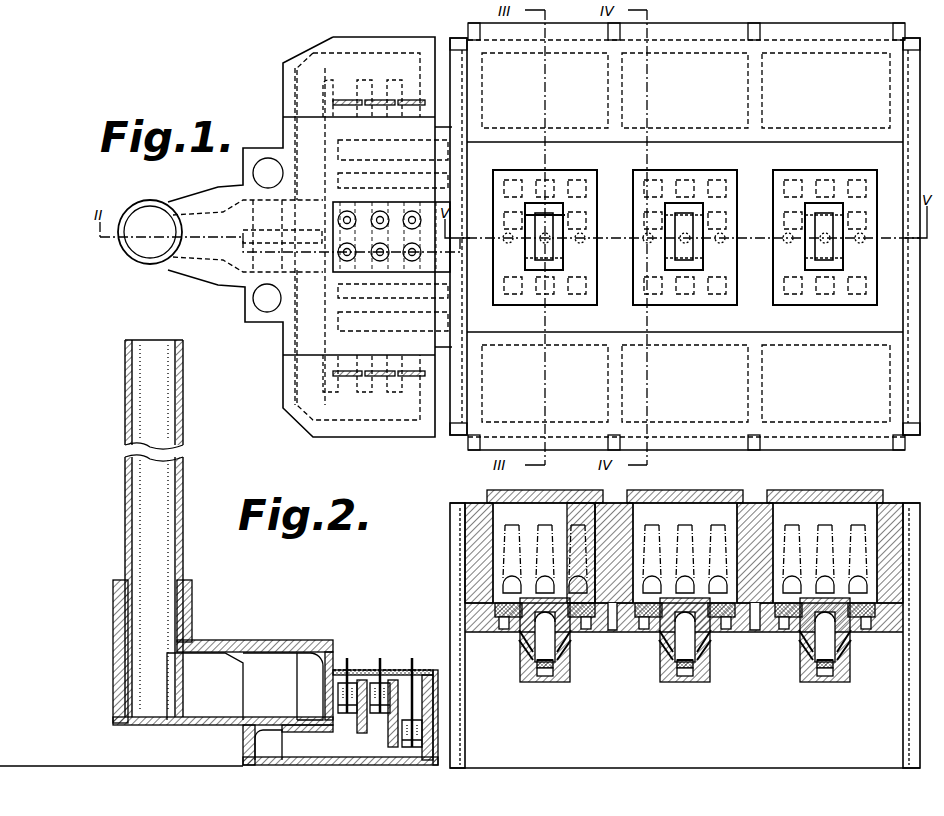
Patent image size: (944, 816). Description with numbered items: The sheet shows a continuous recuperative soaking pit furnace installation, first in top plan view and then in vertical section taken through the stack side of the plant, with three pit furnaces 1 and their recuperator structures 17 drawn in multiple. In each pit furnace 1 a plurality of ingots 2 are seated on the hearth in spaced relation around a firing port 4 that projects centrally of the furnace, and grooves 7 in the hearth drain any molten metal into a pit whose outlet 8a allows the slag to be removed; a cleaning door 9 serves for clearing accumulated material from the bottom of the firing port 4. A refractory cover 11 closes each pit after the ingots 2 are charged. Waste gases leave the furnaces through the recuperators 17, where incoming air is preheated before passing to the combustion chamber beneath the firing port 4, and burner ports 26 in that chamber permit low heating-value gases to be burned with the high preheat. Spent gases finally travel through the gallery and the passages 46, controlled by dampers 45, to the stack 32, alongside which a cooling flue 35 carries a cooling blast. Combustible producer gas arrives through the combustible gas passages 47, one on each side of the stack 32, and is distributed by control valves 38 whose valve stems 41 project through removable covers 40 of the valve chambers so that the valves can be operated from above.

In FIG. 1, the pit furnace 1 is at (877, 247).
In FIG. 2, the pit furnace 1 is at (685, 541).
In FIG. 1, the ingots 2 is at (800, 320).
In FIG. 2, the ingots 2 is at (812, 513).
In FIG. 1, the firing port 4 is at (684, 236).
In FIG. 2, the firing port 4 is at (685, 640).
In FIG. 1, the grooves 7 is at (563, 215).
In FIG. 1, the outlet 8a is at (585, 238).
In FIG. 2, the cleaning door 9 is at (872, 668).
In FIG. 2, the cover 11 is at (837, 478).
In FIG. 1, the recuperator structures 17 is at (686, 237).
In FIG. 2, the burner ports 26 is at (870, 648).
In FIG. 1, the stack 32 is at (152, 266).
In FIG. 2, the stack 32 is at (185, 408).
In FIG. 2, the cooling flue 35 is at (283, 686).
In FIG. 2, the control valves 38 is at (403, 778).
In FIG. 1, the removable covers 40 is at (380, 211).
In FIG. 2, the removable covers 40 is at (436, 635).
In FIG. 2, the valve stems 41 is at (348, 660).
In FIG. 1, the dampers 45 is at (347, 377).
In FIG. 2, the passages 46 is at (205, 686).
In FIG. 1, the combustible gas passages 47 is at (266, 303).
In FIG. 2, the combustible gas passages 47 is at (265, 742).